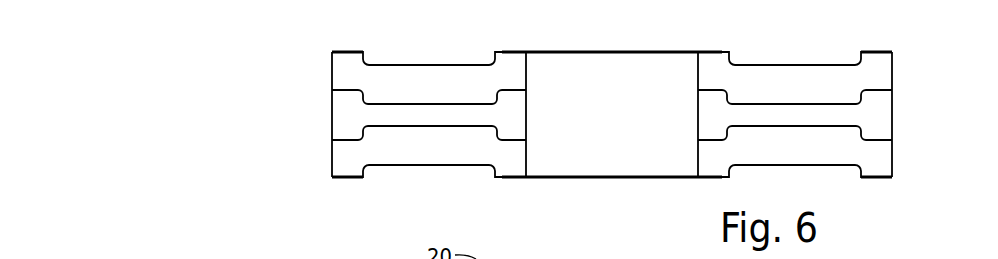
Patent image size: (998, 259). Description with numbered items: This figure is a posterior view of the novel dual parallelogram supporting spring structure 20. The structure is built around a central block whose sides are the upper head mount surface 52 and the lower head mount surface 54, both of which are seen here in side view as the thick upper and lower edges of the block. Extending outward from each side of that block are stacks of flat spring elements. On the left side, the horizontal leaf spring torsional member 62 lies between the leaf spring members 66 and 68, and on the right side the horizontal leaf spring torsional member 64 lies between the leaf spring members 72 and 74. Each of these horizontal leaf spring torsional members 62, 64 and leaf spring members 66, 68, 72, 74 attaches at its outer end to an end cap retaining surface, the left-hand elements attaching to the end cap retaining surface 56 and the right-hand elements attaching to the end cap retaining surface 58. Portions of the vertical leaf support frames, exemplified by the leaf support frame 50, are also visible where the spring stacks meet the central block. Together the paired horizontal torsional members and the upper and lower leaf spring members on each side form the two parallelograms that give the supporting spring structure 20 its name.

The dual parallelogram supporting spring structure 20 is at (549, 115).
The leaf support frame 50 is at (507, 110).
The upper head mount surface 52 is at (627, 52).
The lower head mount surface 54 is at (572, 178).
The end cap retaining surface 56 is at (340, 52).
The end cap retaining surface 58 is at (875, 51).
The horizontal leaf spring torsional member 62 is at (377, 115).
The horizontal leaf spring torsional member 64 is at (838, 117).
The leaf spring member 66 is at (355, 73).
The leaf spring member 68 is at (348, 169).
The leaf spring member 72 is at (873, 71).
The leaf spring member 74 is at (873, 165).